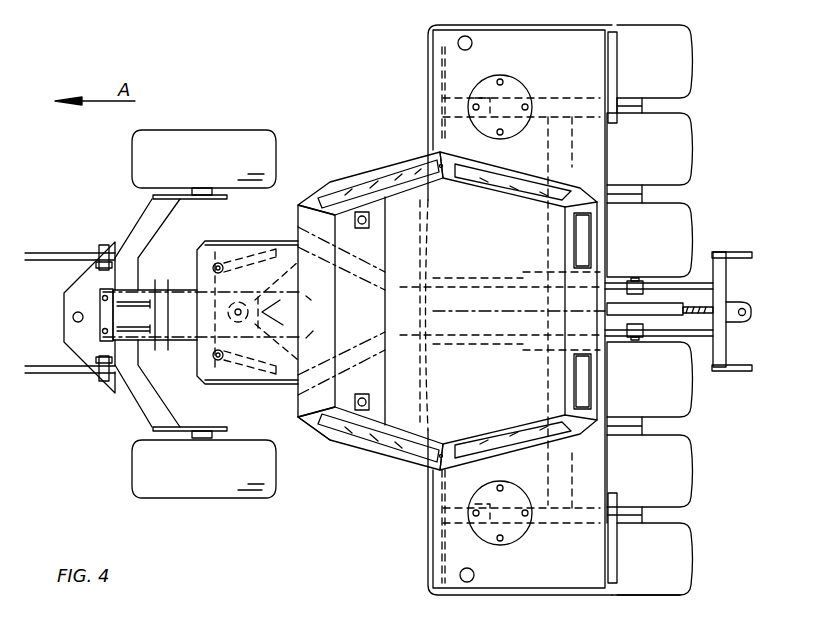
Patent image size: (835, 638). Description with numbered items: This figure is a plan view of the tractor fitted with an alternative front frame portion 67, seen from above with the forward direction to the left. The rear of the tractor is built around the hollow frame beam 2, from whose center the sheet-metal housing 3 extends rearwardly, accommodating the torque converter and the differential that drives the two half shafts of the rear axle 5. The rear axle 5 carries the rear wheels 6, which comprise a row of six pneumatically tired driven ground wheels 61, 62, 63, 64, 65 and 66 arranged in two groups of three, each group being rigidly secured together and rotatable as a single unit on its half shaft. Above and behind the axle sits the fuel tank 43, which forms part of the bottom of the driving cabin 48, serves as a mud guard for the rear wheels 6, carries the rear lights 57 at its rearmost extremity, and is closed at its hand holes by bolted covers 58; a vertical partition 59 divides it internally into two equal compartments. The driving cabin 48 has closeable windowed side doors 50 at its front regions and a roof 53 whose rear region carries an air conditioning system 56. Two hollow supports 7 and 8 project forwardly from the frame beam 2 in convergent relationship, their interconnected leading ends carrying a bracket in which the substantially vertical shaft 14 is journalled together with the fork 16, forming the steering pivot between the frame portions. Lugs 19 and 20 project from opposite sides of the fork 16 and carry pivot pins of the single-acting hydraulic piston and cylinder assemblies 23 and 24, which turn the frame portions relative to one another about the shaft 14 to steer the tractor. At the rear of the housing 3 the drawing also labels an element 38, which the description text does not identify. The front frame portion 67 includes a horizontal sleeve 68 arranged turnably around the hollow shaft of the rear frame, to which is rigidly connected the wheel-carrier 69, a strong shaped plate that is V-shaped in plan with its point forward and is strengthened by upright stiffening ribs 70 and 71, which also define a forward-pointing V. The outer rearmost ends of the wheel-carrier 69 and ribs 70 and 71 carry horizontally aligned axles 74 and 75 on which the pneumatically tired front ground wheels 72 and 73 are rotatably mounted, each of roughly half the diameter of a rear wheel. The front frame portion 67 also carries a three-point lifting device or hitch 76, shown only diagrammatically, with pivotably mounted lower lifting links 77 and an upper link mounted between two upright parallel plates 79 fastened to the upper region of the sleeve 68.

The hollow frame beam 2 is at (383, 282).
The housing 3 is at (388, 326).
The rear axle 5 is at (553, 472).
The rear wheels 6 is at (670, 597).
The hollow support 7 is at (317, 325).
The hollow support 8 is at (316, 298).
The vertical shaft 14 is at (257, 290).
The fork 16 is at (222, 296).
The lugs 19 is at (188, 362).
The lugs 20 is at (208, 245).
The hydraulic piston and cylinder assembly 23 is at (298, 400).
The hydraulic piston and cylinder assembly 24 is at (300, 225).
The hitch bracket 38 is at (694, 287).
The fuel tank 43 is at (428, 78).
The driving cabin 48 is at (355, 173).
The closeable doors 50 is at (415, 160).
The roof 53 is at (347, 418).
The air conditioning system 56 is at (594, 238).
The rear lights 57 is at (617, 74).
The bolted covers 58 is at (527, 88).
The vertical partition 59 is at (468, 315).
The driven ground wheel 61 is at (688, 548).
The driven ground wheel 62 is at (687, 492).
The driven ground wheel 63 is at (687, 407).
The driven ground wheel 64 is at (692, 218).
The driven ground wheel 65 is at (688, 143).
The driven ground wheel 66 is at (690, 73).
The front frame portion 67 is at (131, 223).
The sleeve 68 is at (158, 288).
The wheel-carrier 69 is at (146, 417).
The stiffening rib 70 is at (163, 217).
The stiffening rib 71 is at (165, 406).
The front ground wheel 72 is at (173, 500).
The front ground wheel 73 is at (272, 144).
The axle 74 is at (206, 439).
The axle 75 is at (200, 188).
The three-point lifting device or hitch 76 is at (44, 327).
The lower lifting links 77 is at (63, 254).
The upright parallel plates 79 is at (160, 313).